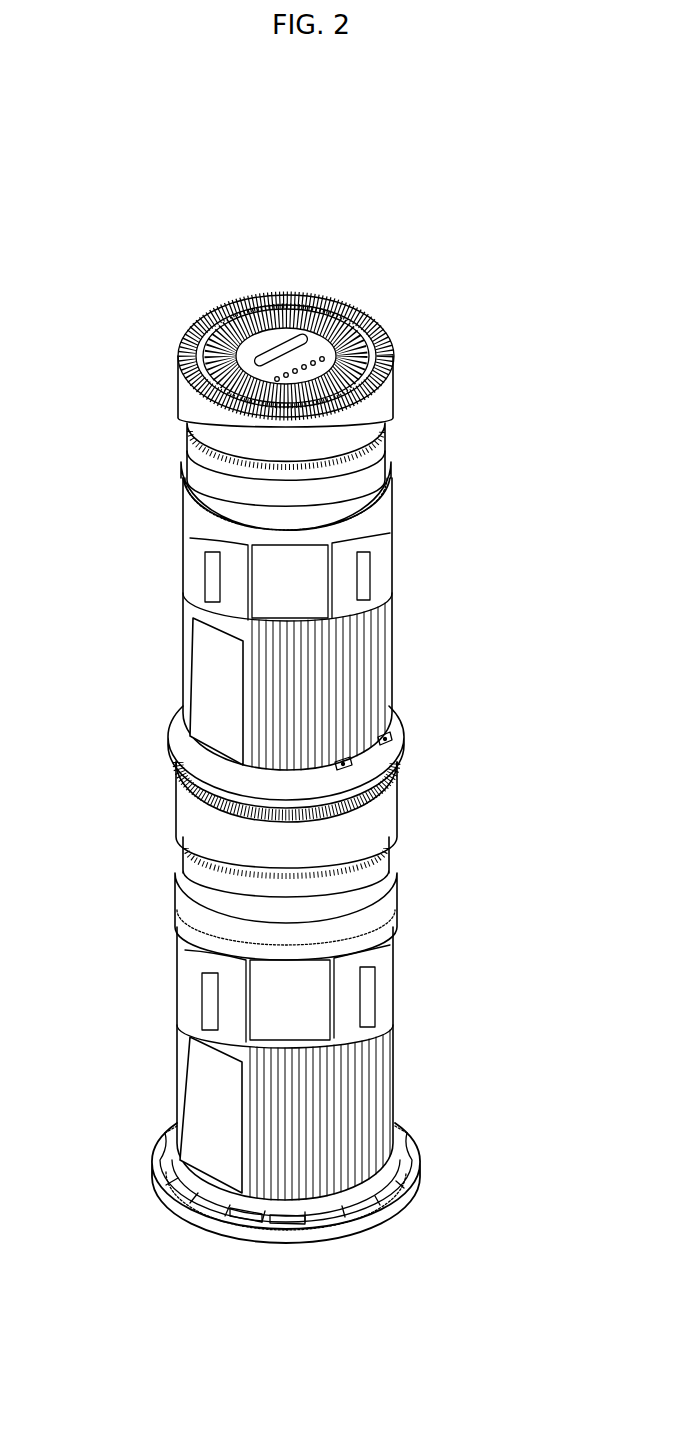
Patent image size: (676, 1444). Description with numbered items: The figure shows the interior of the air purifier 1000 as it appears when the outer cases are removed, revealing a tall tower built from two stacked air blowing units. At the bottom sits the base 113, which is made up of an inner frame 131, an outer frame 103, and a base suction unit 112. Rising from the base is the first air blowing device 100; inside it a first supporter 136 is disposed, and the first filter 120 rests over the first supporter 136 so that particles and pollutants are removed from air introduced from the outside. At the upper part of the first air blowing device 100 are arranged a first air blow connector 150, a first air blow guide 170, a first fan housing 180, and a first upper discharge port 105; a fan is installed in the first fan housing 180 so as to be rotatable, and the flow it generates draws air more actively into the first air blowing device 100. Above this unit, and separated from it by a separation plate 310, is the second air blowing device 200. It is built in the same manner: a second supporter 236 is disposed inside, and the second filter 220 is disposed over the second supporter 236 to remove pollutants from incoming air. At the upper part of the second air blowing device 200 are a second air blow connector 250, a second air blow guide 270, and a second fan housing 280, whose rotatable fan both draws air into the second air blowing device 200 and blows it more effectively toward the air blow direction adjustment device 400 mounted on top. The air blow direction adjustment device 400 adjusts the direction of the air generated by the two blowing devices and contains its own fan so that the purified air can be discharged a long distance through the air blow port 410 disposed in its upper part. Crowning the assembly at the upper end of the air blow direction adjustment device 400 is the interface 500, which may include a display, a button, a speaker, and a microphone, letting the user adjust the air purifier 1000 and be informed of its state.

The air purifier 1000 is at (480, 213).
The air blow direction adjustment device 400 is at (201, 292).
The air blow port 410 is at (185, 337).
The interface 500 is at (275, 330).
The second air blowing device 200 is at (161, 563).
The second fan housing 280 is at (390, 432).
The second air blow guide 270 is at (390, 459).
The second air blow connector 250 is at (392, 487).
The second filter 220 is at (378, 662).
The second supporter 236 is at (200, 678).
The separation plate 310 is at (173, 752).
The first air blowing device 100 is at (161, 992).
The first upper discharge port 105 is at (397, 790).
The first fan housing 180 is at (376, 822).
The first air blow guide 170 is at (392, 880).
The first air blow connector 150 is at (397, 907).
The first filter 120 is at (380, 1082).
The first supporter 136 is at (197, 1115).
The base 113 is at (403, 1188).
The base suction unit 112 is at (416, 1130).
The outer frame 103 is at (352, 1222).
The inner frame 131 is at (254, 1218).